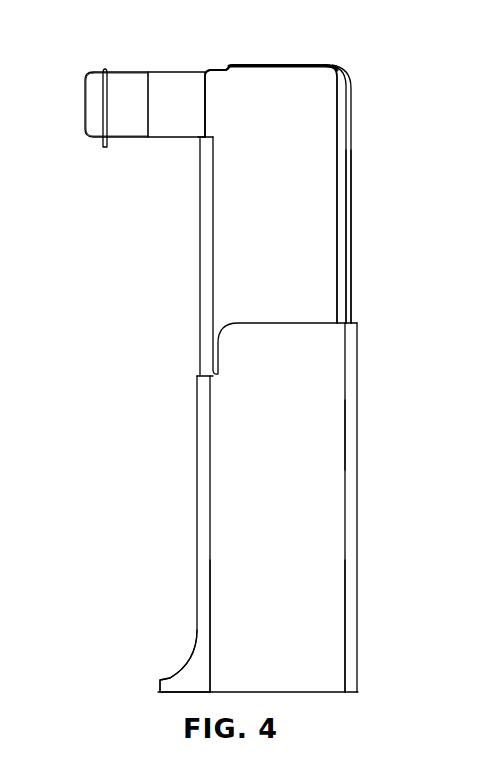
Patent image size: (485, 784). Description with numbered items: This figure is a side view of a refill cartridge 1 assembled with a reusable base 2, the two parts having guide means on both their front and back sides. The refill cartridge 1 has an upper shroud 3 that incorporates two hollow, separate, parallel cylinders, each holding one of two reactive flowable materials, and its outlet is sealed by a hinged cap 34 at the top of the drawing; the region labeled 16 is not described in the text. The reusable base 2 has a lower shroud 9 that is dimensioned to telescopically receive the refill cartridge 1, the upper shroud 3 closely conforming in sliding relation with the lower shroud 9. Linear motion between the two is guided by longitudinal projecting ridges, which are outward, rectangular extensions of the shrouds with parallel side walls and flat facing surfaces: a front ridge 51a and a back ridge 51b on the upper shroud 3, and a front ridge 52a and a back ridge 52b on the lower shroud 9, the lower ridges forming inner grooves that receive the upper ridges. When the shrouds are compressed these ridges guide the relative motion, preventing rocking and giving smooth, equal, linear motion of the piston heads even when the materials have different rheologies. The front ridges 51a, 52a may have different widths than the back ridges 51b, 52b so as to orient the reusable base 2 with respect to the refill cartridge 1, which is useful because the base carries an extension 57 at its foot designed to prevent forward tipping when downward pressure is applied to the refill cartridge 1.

The refill cartridge 1 is at (186, 175).
The reusable base 2 is at (365, 458).
The upper shroud 3 is at (327, 149).
The lower shroud 9 is at (337, 607).
The head portion 16 is at (130, 82).
The hinged cap 34 is at (92, 97).
The front longitudinal projecting ridge of the upper shroud 51a is at (207, 271).
The back longitudinal projecting ridge of the upper shroud 51b is at (345, 210).
The front longitudinal projecting ridge of the lower shroud 52a is at (205, 426).
The back longitudinal projecting ridge of the lower shroud 52b is at (350, 405).
The extension 57 is at (188, 671).